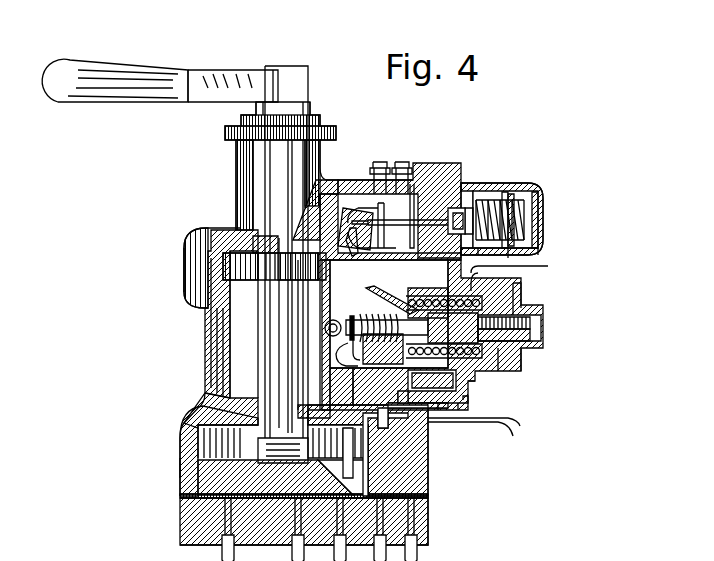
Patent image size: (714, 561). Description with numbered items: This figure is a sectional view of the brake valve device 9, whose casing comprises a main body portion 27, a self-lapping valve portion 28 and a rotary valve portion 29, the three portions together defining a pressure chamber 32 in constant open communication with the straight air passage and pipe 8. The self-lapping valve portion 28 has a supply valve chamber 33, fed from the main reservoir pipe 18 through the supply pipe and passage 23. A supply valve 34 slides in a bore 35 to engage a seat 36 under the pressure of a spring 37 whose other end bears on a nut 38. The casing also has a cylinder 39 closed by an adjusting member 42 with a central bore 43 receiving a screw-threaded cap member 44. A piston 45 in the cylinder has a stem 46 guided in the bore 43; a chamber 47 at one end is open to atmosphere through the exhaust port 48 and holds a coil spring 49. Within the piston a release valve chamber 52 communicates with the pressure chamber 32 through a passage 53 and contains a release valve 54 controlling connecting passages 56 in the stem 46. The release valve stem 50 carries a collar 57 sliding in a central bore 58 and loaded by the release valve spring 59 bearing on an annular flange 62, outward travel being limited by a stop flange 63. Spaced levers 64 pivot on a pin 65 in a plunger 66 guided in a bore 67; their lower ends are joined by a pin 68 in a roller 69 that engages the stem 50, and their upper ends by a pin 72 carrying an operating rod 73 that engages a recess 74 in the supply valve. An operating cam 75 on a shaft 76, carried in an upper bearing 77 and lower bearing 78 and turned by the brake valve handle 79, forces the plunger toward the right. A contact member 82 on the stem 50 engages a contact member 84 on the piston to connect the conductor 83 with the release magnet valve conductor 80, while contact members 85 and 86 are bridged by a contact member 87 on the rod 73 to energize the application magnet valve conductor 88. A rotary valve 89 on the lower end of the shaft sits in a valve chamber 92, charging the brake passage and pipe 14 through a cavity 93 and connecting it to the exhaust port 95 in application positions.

The straight air passage and pipe 8 is at (367, 545).
The brake valve device 9 is at (322, 118).
The brake passage and pipe 14 is at (284, 545).
The main reservoir pipe 18 is at (327, 545).
The supply pipe and passage 23 is at (410, 518).
The main body portion 27 is at (166, 261).
The self-lapping valve portion 28 is at (637, 238).
The rotary valve portion 29 is at (163, 449).
The pressure chamber 32 is at (236, 376).
The supply valve chamber 33 is at (480, 170).
The supply valve 34 is at (498, 185).
The bore 35 is at (520, 180).
The seat 36 is at (447, 160).
The spring 37 is at (516, 212).
The nut 38 is at (536, 178).
The cylinder 39 is at (400, 420).
The adjusting member 42 is at (515, 278).
The central bore 43 is at (535, 310).
The screw-threaded cap member 44 is at (535, 330).
The piston 45 is at (326, 386).
The stem 46 is at (470, 368).
The chamber 47 is at (455, 382).
The exhaust port 48 is at (460, 388).
The coil spring 49 is at (520, 352).
The release valve stem 50 is at (505, 270).
The release valve chamber 52 is at (440, 388).
The passage 53 is at (350, 215).
The release valve 54 is at (430, 296).
The connecting passages 56 is at (468, 300).
The collar 57 is at (318, 312).
The central bore 58 is at (325, 366).
The release valve spring 59 is at (420, 316).
The annular flange 62 is at (412, 402).
The stop flange 63 is at (266, 330).
The spaced levers 64 is at (296, 220).
The pin 65 is at (282, 222).
The plunger 66 is at (262, 298).
The bore 67 is at (530, 240).
The pin 68 is at (200, 338).
The roller 69 is at (200, 318).
The pin 72 is at (300, 210).
The operating rod 73 is at (438, 160).
The recess 74 is at (466, 178).
The operating cam 75 is at (214, 262).
The shaft 76 is at (212, 378).
The upper bearing 77 is at (200, 224).
The lower bearing 78 is at (185, 410).
The brake valve handle 79 is at (88, 52).
The release magnet valve conductor 80 is at (506, 430).
The contact member 82 is at (206, 360).
The conductor 83 is at (364, 156).
The contact member 84 is at (268, 356).
The contact member 85 is at (352, 180).
The contact member 86 is at (402, 160).
The contact member 87 is at (382, 250).
The application magnet valve conductor 88 is at (398, 158).
The rotary valve 89 is at (200, 468).
The valve chamber 92 is at (186, 436).
The cavity 93 is at (176, 504).
The exhaust port 95 is at (214, 543).